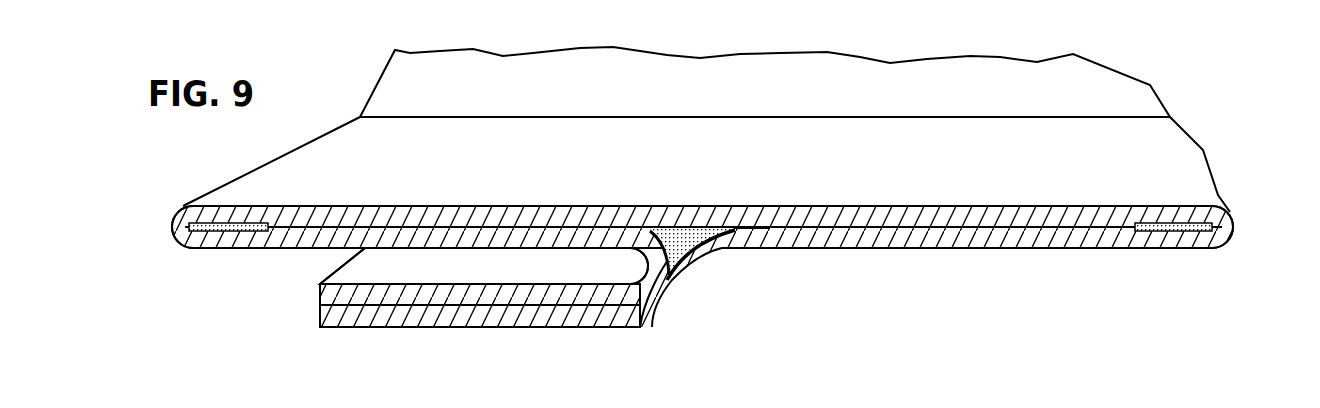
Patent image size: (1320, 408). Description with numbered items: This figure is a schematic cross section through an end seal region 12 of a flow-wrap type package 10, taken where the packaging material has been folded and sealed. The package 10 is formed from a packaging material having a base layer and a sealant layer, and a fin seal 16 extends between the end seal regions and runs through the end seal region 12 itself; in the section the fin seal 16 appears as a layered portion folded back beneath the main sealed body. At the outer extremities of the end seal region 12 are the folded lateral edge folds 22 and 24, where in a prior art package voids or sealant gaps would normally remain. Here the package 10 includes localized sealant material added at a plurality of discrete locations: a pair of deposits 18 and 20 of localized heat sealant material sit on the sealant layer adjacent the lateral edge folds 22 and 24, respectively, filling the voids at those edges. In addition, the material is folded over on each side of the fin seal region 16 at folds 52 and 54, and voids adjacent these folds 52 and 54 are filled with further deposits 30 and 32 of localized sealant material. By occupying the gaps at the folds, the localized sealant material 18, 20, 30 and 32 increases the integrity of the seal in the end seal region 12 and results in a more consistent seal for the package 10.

The flow-wrap type package 10 is at (366, 56).
The end seal region 12 is at (332, 167).
The fin seal 16 is at (366, 327).
The deposit of localized heat sealant material 18 is at (227, 234).
The deposit of localized heat sealant material 20 is at (1176, 235).
The lateral edge fold 22 is at (172, 228).
The lateral edge fold 24 is at (1234, 230).
The deposit of localized heat sealant material 30 is at (639, 327).
The deposit of localized heat sealant material 32 is at (700, 278).
The fold 52 is at (640, 265).
The fold 54 is at (706, 253).